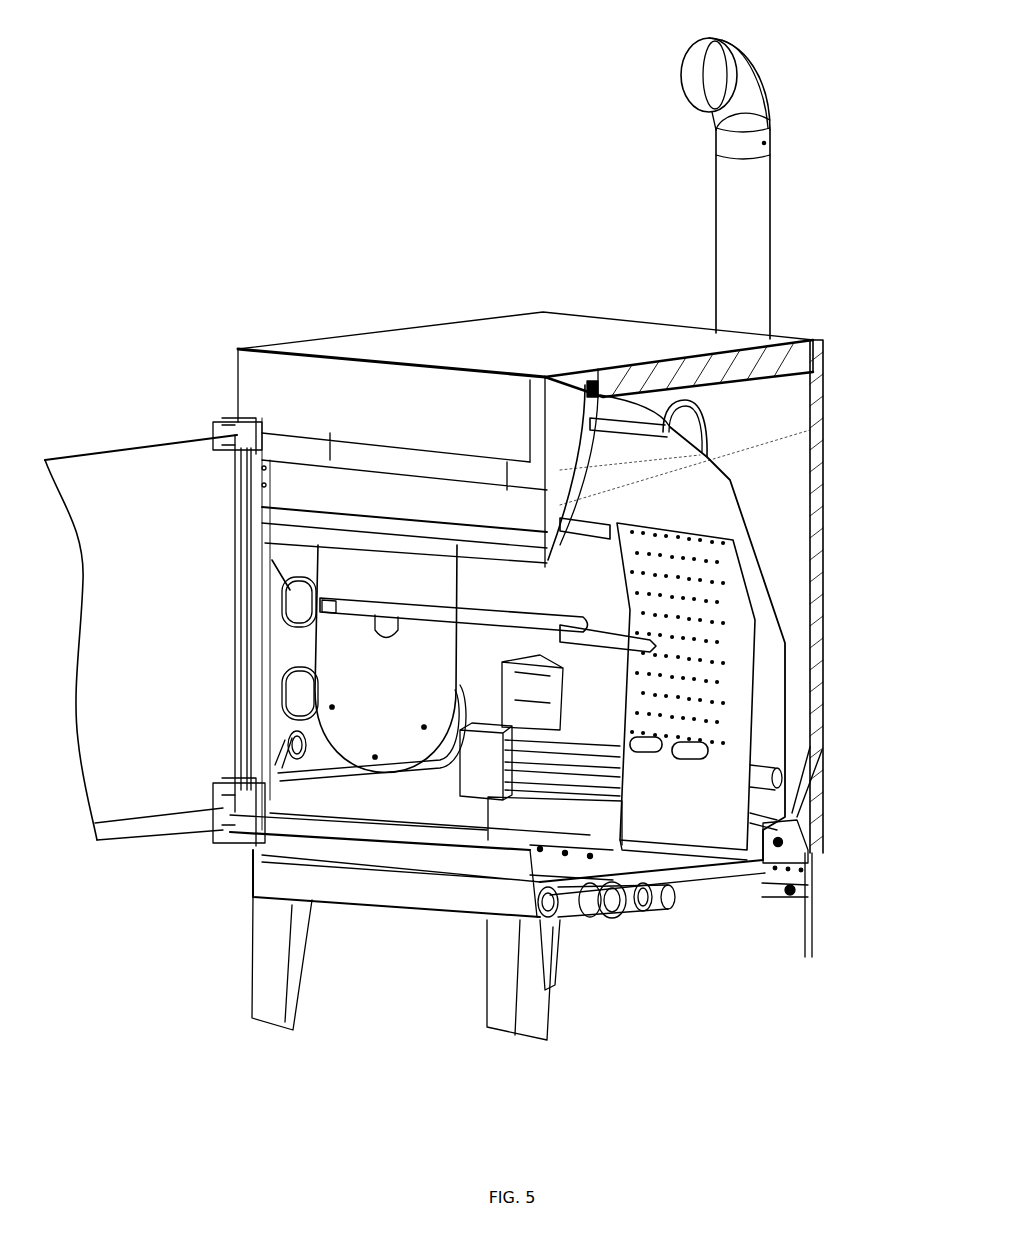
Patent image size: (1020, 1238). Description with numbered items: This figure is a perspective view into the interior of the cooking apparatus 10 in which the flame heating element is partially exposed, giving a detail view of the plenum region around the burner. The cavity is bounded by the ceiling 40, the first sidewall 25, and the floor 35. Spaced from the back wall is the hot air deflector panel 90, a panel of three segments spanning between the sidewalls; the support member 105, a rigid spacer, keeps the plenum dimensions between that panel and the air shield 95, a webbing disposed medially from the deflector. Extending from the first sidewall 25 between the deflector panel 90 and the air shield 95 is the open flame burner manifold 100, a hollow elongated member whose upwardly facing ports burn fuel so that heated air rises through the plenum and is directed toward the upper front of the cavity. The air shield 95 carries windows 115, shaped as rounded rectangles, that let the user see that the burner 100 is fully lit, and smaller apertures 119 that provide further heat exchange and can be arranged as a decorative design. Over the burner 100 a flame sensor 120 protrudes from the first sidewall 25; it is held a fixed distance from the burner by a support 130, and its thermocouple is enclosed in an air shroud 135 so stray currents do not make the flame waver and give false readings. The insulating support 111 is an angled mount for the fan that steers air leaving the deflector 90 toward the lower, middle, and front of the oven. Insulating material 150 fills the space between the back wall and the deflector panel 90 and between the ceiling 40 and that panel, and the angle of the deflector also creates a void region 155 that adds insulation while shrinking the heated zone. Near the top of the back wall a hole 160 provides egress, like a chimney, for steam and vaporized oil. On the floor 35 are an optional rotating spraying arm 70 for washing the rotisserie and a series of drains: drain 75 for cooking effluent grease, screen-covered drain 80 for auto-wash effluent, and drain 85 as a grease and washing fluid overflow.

The cooking apparatus 10 is at (285, 322).
The ceiling 40 is at (360, 332).
The first sidewall 25 is at (272, 560).
The flame sensor 120 is at (524, 622).
The support 130 is at (545, 672).
The air shroud 135 is at (545, 720).
The hole 160 is at (683, 398).
The insulating support 111 is at (592, 380).
The insulating material 150 is at (790, 337).
The hot air deflector panel 90 is at (720, 488).
The support member 105 is at (615, 523).
The void region 155 is at (782, 515).
The apertures 119 is at (712, 673).
The windows 115 is at (648, 745).
The open flame burner manifold 100 is at (818, 748).
The air shield 95 is at (713, 810).
The floor 35 is at (690, 868).
The rotating spraying arm 70 is at (556, 922).
The drain 75 is at (605, 928).
The drain 80 is at (645, 925).
The drain 85 is at (670, 916).